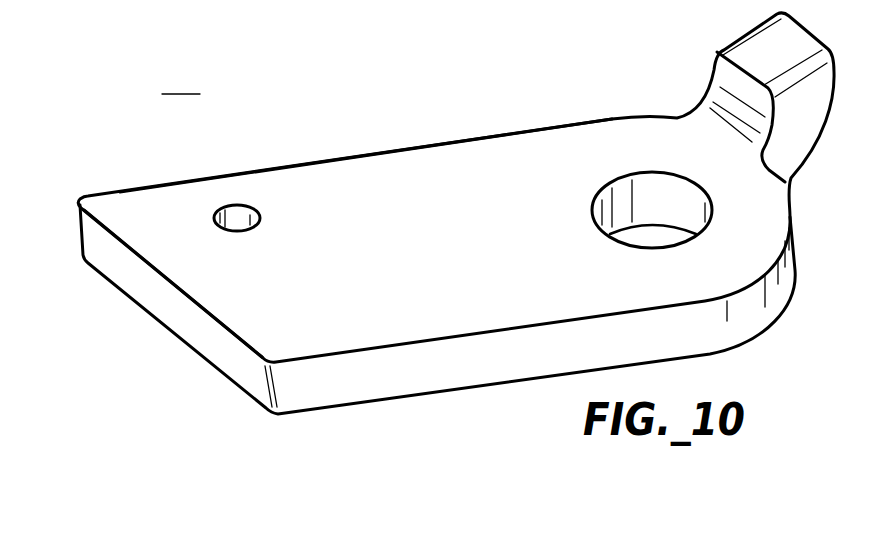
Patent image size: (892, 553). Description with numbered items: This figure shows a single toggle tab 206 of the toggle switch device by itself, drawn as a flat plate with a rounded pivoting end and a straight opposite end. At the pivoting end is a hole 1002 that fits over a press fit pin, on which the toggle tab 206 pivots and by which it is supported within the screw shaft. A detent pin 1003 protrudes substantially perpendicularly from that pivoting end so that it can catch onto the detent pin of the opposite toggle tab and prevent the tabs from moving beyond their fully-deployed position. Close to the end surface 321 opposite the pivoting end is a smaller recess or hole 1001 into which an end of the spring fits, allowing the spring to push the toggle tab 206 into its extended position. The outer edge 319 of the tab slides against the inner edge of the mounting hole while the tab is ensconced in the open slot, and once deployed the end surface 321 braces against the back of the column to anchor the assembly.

The toggle tab 206 is at (456, 213).
The outer edge 319 is at (388, 150).
The end surface 321 is at (172, 318).
The recess or hole 1001 is at (235, 214).
The hole 1002 is at (627, 203).
The detent pin 1003 is at (752, 50).